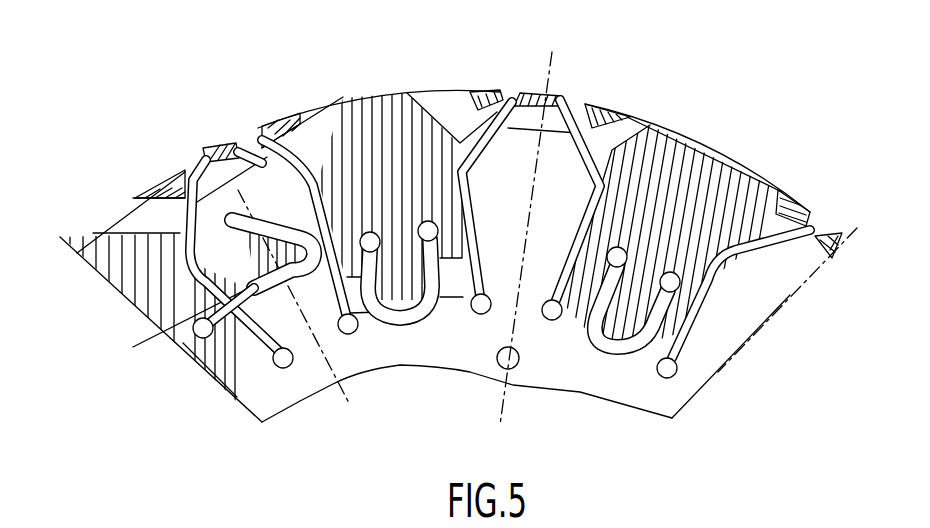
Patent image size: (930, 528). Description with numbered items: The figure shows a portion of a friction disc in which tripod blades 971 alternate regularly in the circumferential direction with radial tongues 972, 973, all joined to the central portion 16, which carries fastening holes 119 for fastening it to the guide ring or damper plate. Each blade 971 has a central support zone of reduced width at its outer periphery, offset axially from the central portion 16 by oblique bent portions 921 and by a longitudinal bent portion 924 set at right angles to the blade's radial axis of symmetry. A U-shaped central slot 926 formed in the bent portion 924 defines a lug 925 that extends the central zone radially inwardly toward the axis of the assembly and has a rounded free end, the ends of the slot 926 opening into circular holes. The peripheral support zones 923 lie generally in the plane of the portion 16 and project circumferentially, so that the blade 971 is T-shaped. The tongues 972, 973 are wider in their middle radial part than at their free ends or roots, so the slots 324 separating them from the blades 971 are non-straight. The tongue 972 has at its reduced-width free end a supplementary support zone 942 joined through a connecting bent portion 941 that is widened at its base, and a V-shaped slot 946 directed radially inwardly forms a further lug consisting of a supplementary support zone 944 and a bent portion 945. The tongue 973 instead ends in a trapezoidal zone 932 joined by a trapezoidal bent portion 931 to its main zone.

The central portion 16 is at (446, 374).
The fastening holes 119 is at (512, 366).
The slots 324 is at (700, 297).
The bent portions 921 is at (350, 105).
The peripheral support zones 923 is at (283, 128).
The longitudinal bent portion 924 is at (676, 352).
The lug 925 is at (634, 337).
The U-shaped central slot 926 is at (598, 358).
The bent portion 931 is at (511, 110).
The zone 932 is at (557, 97).
The connecting bent portion 941 is at (200, 175).
The supplementary support zone 942 is at (205, 150).
The supplementary support zone 944 is at (200, 335).
The bent portion 945 is at (250, 410).
The slot 946 is at (160, 335).
The tripod blade 971 is at (683, 265).
The radial tongue 972 is at (224, 226).
The radial tongue 973 is at (485, 167).